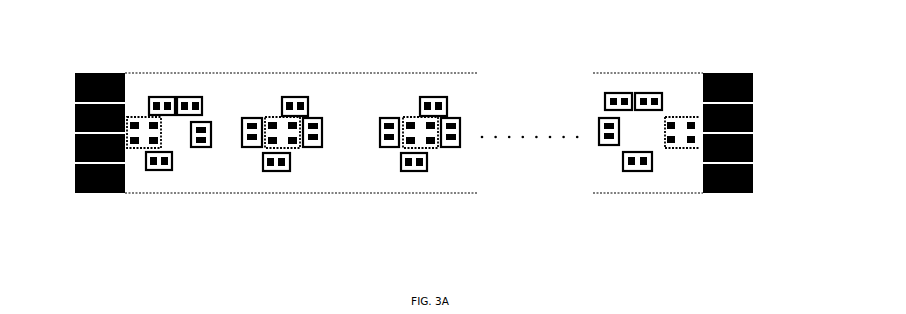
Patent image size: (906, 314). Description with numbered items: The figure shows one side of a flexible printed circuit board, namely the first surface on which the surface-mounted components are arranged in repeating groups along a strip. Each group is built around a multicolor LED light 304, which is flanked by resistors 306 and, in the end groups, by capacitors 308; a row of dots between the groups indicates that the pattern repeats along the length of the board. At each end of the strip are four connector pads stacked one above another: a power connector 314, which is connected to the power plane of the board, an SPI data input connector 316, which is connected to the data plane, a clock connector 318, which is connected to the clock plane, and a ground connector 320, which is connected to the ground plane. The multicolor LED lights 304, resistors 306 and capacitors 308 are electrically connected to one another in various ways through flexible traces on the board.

The multicolor LED lights 304 is at (132, 148).
The resistors 306 is at (204, 97).
The capacitors 308 is at (164, 97).
The power connector 314 is at (75, 89).
The SPI data input (SDI) connector 316 is at (75, 113).
The clock connector 318 is at (75, 143).
The ground connector 320 is at (75, 178).